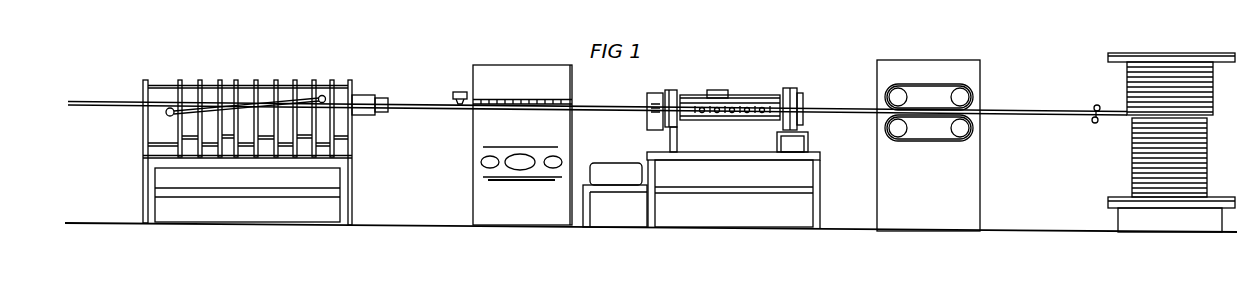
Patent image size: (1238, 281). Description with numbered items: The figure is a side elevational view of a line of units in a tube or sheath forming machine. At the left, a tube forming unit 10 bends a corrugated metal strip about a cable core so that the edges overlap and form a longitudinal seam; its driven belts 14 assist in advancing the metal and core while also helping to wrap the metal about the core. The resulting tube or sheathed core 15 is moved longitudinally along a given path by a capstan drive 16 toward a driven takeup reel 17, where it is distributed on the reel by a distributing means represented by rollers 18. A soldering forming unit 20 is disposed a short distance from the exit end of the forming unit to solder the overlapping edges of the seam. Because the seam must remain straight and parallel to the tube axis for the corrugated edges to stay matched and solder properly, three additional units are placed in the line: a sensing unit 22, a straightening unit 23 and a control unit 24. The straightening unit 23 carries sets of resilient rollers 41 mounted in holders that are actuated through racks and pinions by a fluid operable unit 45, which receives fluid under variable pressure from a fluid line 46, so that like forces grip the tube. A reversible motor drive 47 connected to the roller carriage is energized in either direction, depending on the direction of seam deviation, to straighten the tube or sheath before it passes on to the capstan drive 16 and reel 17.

The tube forming unit 10 is at (173, 72).
The belts 14 is at (306, 90).
The tube or sheathed core 15 is at (86, 106).
The capstan drive 16 is at (893, 73).
The driven takeup reel 17 is at (1140, 78).
The rollers 18 is at (1090, 127).
The soldering forming unit 20 is at (553, 88).
The sensing unit 22 is at (458, 83).
The straightening unit 23 is at (742, 83).
The control unit 24 is at (623, 155).
The rollers 41 is at (718, 125).
The fluid operable unit 45 is at (728, 90).
The fluid line 46 is at (659, 85).
The reversible motor drive 47 is at (790, 89).